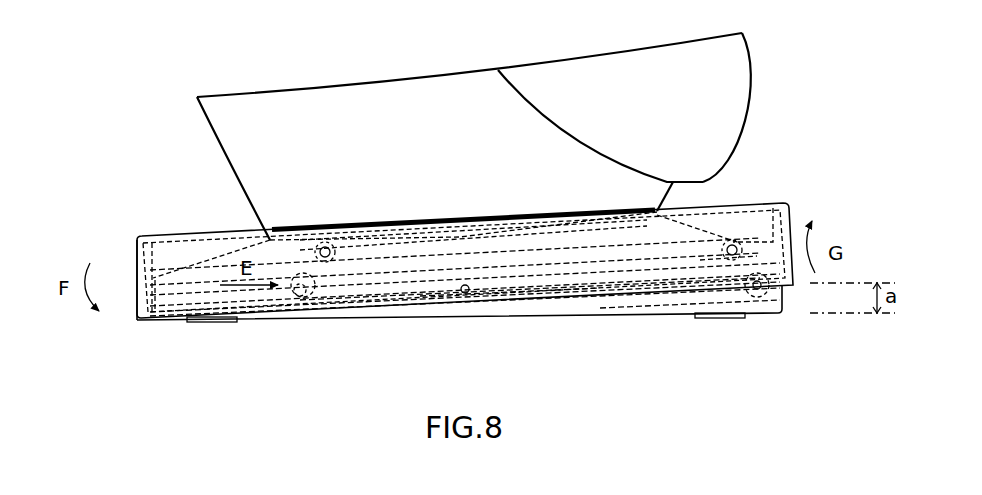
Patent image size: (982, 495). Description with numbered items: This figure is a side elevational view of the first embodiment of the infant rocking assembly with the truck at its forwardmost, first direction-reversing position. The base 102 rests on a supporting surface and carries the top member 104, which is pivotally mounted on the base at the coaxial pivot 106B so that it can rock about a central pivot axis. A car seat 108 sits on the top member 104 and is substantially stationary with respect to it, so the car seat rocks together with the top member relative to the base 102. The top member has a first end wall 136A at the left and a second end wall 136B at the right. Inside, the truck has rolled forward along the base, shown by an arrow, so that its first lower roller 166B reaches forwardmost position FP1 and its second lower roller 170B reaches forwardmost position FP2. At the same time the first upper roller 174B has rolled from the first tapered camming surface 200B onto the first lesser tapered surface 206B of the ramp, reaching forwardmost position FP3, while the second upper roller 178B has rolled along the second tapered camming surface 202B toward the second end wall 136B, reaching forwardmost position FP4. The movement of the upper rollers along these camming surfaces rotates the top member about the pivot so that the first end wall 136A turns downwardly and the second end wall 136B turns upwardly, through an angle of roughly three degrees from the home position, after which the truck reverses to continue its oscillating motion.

The car seat 108 is at (220, 162).
The top member 104 is at (223, 229).
The base 102 is at (375, 323).
The first end wall 136A is at (133, 265).
The second end wall 136B is at (793, 220).
The first lesser tapered surface 206B is at (387, 220).
The first upper roller 174B is at (360, 227).
The first tapered camming surface 200B is at (192, 323).
The first lower roller 166B is at (263, 327).
The second tapered camming surface 202B is at (647, 320).
The second lower roller 170B is at (718, 320).
The second upper roller 178B is at (718, 240).
The second coaxial pivot 106B is at (466, 293).
The forwardmost position of lower roller 166B FP1 is at (312, 323).
The forwardmost position of lower roller 170B FP2 is at (757, 320).
The forwardmost position of upper roller 174B FP3 is at (325, 243).
The forwardmost position of upper roller 178B FP4 is at (739, 235).